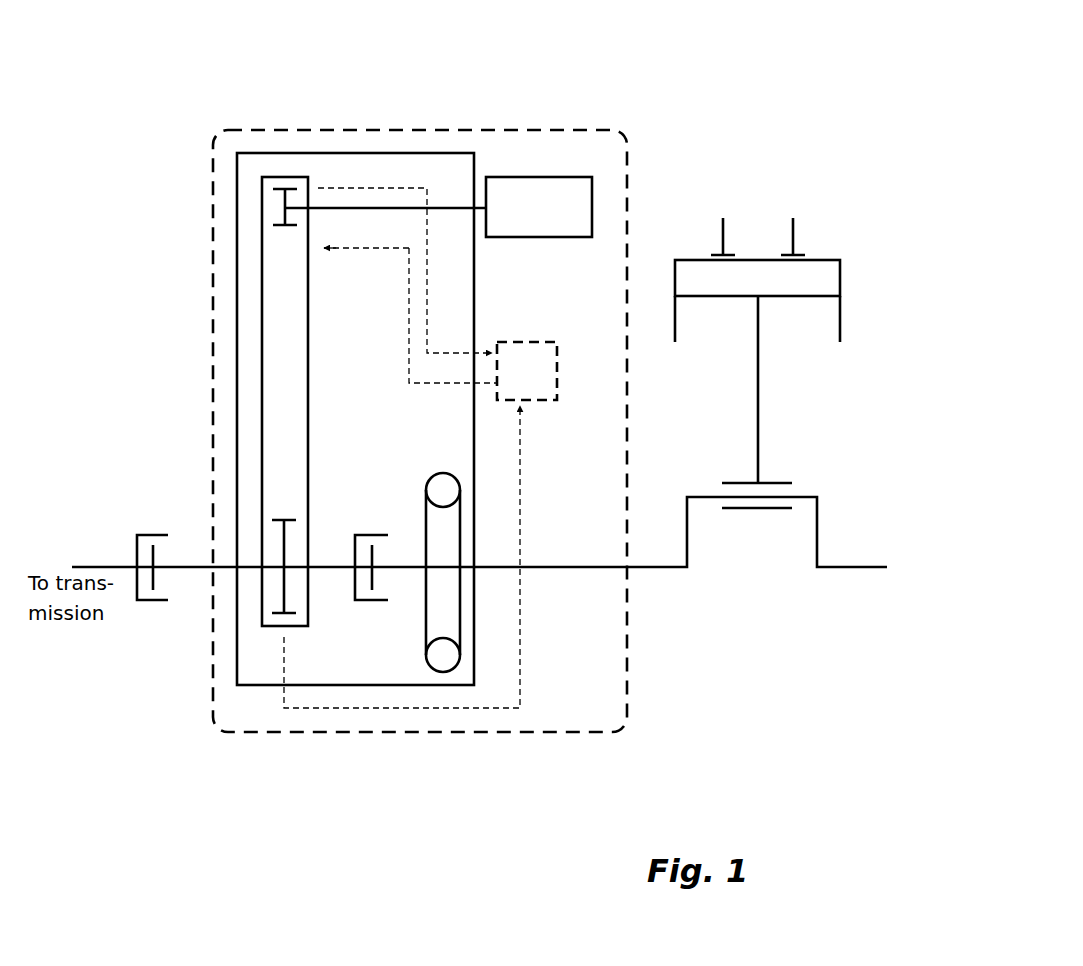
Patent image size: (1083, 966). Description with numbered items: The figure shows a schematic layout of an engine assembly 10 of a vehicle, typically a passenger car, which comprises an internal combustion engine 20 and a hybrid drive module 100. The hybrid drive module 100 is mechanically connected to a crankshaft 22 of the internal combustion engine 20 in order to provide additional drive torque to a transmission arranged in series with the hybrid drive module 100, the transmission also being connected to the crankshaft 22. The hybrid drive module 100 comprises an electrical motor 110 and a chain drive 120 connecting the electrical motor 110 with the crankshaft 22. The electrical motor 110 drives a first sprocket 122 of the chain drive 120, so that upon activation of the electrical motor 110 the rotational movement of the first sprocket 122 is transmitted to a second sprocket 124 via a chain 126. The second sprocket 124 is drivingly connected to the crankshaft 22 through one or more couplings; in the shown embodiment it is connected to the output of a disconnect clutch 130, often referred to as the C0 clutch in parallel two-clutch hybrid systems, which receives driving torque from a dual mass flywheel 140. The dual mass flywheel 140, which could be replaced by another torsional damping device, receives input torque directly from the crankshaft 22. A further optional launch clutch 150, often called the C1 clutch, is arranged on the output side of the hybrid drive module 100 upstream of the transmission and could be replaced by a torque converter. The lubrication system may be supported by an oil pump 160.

The engine assembly 10 is at (722, 96).
The internal combustion engine 20 is at (855, 262).
The crankshaft 22 is at (665, 569).
The hybrid drive module 100 is at (403, 130).
The electrical motor 110 is at (497, 176).
The chain drive 120 is at (322, 466).
The first sprocket 122 is at (284, 215).
The second sprocket 124 is at (284, 597).
The chain 126 is at (308, 345).
The disconnect clutch 130 is at (360, 600).
The dual mass flywheel 140 is at (428, 483).
The launch clutch 150 is at (147, 535).
The oil pump 160 is at (532, 402).